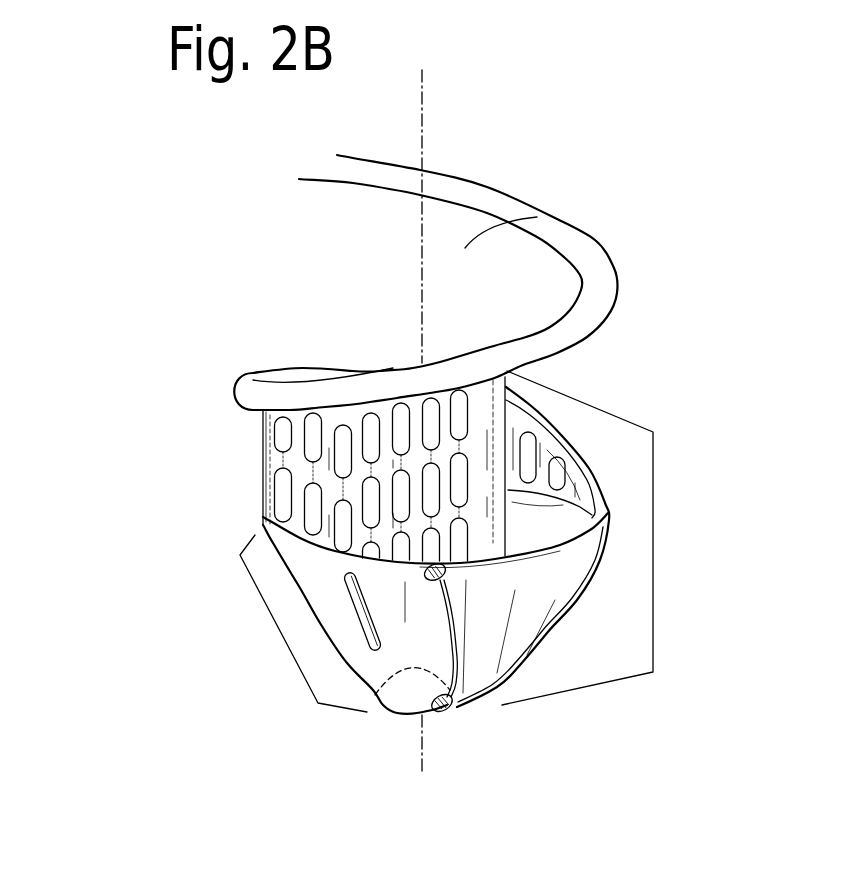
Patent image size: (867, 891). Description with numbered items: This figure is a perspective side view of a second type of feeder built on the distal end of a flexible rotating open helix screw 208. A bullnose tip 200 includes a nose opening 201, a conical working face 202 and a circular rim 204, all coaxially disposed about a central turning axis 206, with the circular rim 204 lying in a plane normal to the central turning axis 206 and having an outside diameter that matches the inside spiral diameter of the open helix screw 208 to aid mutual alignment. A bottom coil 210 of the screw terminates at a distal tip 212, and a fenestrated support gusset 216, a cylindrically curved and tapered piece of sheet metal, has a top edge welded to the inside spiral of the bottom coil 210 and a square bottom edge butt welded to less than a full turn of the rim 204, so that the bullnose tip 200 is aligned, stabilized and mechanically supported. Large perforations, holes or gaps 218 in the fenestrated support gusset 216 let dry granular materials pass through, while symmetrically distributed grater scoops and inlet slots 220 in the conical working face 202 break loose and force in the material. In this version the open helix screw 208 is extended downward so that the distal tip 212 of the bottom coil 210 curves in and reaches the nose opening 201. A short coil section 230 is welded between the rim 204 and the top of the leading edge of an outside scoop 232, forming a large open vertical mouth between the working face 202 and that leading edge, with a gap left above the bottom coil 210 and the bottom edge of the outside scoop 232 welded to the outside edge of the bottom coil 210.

The bullnose tip 200 is at (283, 630).
The nose opening 201 is at (395, 712).
The conical working face 202 is at (430, 651).
The circular rim 204 is at (263, 522).
The central turning axis 206 is at (416, 473).
The flexible rotating open helix screw 208 is at (425, 282).
The bottom coil 210 is at (653, 548).
The distal tip 212 is at (445, 712).
The fenestrated support gusset 216 is at (263, 470).
The perforations, holes, and/or gaps 218 is at (372, 418).
The grater scoops and inlet slots 220 is at (340, 593).
The short coil section 230 is at (447, 575).
The outside scoop 232 is at (502, 651).